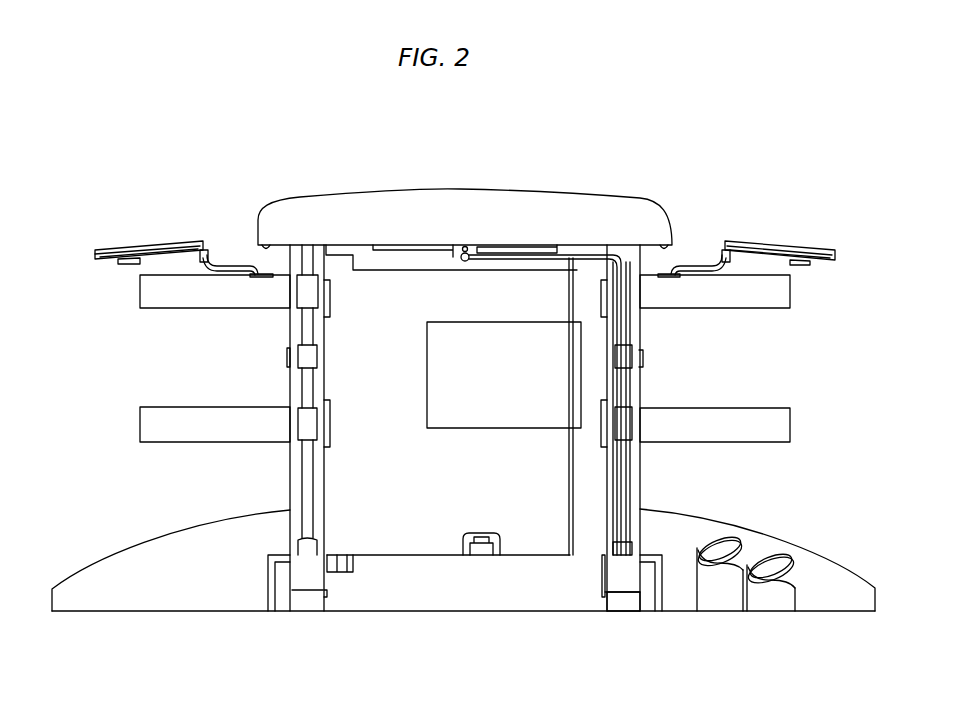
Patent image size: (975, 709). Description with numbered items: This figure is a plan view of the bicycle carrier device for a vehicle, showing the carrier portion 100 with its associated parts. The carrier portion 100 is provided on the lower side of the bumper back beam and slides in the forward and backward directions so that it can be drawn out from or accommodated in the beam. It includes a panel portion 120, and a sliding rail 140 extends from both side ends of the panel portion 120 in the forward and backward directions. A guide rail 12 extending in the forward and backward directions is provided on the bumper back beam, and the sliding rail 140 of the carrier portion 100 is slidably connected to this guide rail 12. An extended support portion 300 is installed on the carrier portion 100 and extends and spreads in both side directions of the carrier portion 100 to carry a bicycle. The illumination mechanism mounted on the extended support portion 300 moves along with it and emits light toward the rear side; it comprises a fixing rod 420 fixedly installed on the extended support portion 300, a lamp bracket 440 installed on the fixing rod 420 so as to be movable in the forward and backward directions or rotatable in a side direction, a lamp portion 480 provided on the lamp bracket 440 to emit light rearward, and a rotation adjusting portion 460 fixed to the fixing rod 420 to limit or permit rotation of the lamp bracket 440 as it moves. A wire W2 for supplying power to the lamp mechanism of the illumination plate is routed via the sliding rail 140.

The carrier portion 100 is at (615, 199).
The panel portion 120 is at (462, 200).
The wire W2 is at (566, 243).
The sliding rail 140 is at (640, 473).
The guide rail 12 is at (622, 580).
The extended support portion 300 is at (778, 303).
The fixing rod 420 is at (705, 265).
The lamp bracket 440 is at (200, 262).
The rotation adjusting portion 460 is at (205, 248).
The lamp portion 480 is at (130, 243).